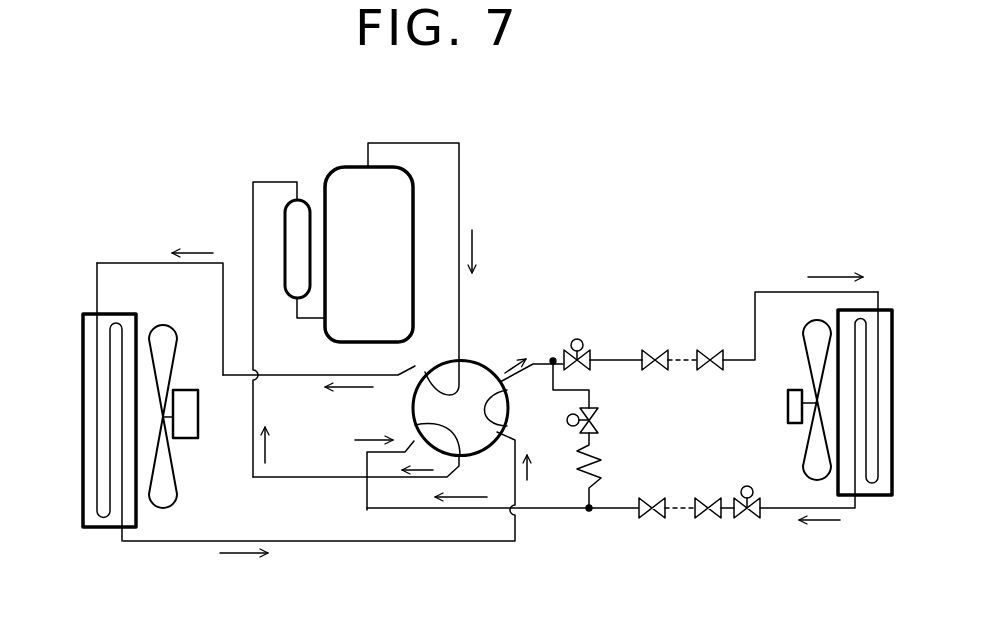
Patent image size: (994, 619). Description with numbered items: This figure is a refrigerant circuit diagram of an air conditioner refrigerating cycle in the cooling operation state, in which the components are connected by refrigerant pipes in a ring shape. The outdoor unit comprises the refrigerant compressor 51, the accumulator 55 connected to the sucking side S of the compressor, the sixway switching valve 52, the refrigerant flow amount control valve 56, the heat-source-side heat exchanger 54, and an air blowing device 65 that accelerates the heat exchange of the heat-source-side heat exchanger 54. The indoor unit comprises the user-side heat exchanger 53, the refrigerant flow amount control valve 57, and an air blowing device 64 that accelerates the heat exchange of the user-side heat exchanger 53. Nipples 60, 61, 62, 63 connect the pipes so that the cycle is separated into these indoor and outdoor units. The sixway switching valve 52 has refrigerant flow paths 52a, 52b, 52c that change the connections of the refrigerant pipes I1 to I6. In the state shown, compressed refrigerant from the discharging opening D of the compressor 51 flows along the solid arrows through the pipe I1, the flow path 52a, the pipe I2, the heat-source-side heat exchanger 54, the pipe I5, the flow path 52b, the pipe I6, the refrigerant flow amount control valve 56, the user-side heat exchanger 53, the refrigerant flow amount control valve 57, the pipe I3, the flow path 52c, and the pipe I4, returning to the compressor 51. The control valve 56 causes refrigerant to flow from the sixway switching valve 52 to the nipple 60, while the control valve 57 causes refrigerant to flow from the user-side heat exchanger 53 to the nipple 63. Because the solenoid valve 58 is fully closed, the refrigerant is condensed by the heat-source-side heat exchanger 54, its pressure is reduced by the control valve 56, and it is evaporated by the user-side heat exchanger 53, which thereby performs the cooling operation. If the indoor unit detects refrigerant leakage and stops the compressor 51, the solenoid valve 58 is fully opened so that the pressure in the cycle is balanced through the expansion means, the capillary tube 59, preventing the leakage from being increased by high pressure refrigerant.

The refrigerant compressor 51 is at (333, 183).
The accumulator 55 is at (290, 213).
The sixway switching valve 52 is at (456, 386).
The refrigerant flow path 52a is at (427, 368).
The refrigerant flow path 52b is at (508, 412).
The refrigerant flow path 52c is at (413, 418).
The user-side heat exchanger 53 is at (878, 498).
The heat-source-side heat exchanger 54 is at (90, 312).
The refrigerant flow amount control valve 56 is at (578, 338).
The refrigerant flow amount control valve 57 is at (748, 518).
The solenoid valve 58 is at (597, 411).
The capillary tube 59 is at (602, 465).
The nipple 60 is at (657, 352).
The nipple 61 is at (703, 352).
The nipple 62 is at (655, 520).
The nipple 63 is at (712, 520).
The air blowing device 64 is at (788, 410).
The air blowing device 65 is at (198, 420).
The refrigerant pipe I1 is at (460, 333).
The refrigerant pipe I2 is at (402, 372).
The refrigerant pipe I3 is at (408, 440).
The refrigerant pipe I4 is at (461, 466).
The refrigerant pipe I5 is at (513, 436).
The refrigerant pipe I6 is at (528, 376).